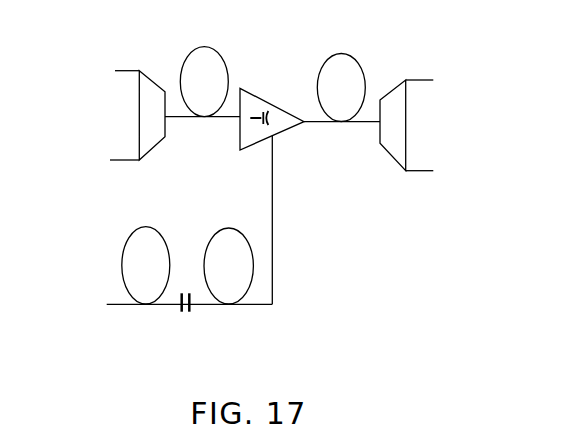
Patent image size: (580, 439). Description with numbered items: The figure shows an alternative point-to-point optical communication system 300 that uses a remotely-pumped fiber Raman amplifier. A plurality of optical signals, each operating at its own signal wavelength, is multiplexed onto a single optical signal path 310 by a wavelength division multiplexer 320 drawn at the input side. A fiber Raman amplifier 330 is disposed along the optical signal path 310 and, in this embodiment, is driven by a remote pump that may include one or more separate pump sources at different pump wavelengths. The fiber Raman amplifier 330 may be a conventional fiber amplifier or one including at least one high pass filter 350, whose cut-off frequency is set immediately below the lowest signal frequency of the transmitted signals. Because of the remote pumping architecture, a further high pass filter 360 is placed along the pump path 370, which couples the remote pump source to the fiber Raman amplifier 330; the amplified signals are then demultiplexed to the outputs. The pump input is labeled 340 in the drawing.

The optical communication system 300 is at (370, 258).
The optical signal path 310 is at (180, 67).
The wavelength division multiplexer 320 is at (151, 145).
The fiber Raman amplifier 330 is at (256, 100).
The pump input 340 is at (88, 325).
The high pass filter 350 is at (274, 122).
The high pass filter 360 is at (183, 282).
The pump path 370 is at (272, 247).